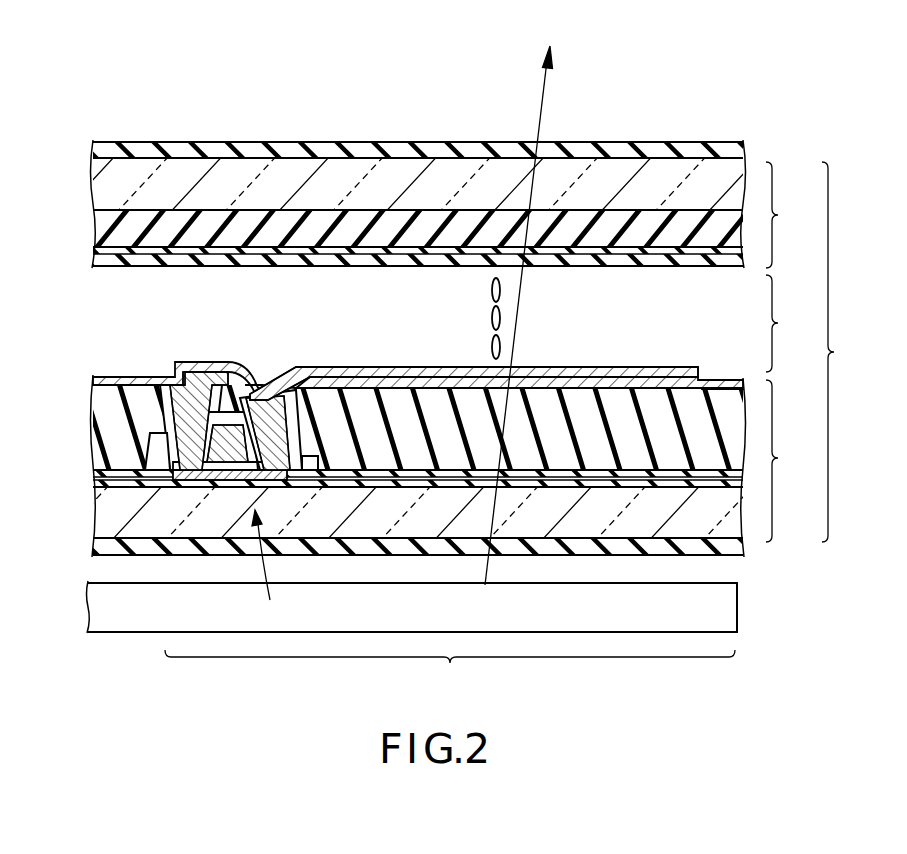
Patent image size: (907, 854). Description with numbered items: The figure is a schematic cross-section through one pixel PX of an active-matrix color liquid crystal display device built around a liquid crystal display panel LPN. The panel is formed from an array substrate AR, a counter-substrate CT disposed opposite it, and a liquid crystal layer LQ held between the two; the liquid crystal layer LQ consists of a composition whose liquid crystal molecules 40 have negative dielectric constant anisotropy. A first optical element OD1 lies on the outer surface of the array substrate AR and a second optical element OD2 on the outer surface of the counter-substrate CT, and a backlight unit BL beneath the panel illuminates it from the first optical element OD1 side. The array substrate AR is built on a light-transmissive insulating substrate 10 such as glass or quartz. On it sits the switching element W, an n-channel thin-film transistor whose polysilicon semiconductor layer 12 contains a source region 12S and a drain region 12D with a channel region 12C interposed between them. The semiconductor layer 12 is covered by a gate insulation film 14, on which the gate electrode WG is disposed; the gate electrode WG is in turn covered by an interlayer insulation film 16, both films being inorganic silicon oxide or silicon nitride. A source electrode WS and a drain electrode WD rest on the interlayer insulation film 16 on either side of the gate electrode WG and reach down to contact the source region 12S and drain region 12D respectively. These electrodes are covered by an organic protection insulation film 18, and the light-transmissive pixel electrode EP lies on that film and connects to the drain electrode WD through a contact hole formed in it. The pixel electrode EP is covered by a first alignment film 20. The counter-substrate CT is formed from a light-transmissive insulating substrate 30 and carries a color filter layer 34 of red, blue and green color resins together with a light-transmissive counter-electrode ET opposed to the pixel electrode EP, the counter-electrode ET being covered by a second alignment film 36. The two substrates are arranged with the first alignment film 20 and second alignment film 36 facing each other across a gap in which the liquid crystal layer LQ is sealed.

The insulating substrate 10 is at (93, 510).
The semiconductor layer 12 is at (246, 482).
The source region 12S is at (185, 482).
The channel region 12C is at (228, 482).
The drain region 12D is at (273, 482).
The gate insulation film 14 is at (93, 485).
The interlayer insulation film 16 is at (93, 472).
The protection insulation film 18 is at (93, 411).
The first alignment film 20 is at (135, 377).
The insulating substrate 30 is at (93, 177).
The color filter layer 34 is at (447, 238).
The second alignment film 36 is at (93, 262).
The liquid crystal molecules 40 is at (492, 320).
The switching element W is at (267, 569).
The source electrode WS is at (190, 400).
The drain electrode WD is at (268, 420).
The gate electrode WG is at (233, 440).
The pixel electrode EP is at (370, 367).
The counter-electrode ET is at (647, 256).
The first optical element OD1 is at (745, 550).
The second optical element OD2 is at (745, 156).
The counter-substrate CT is at (789, 215).
The array substrate AR is at (789, 461).
The liquid crystal layer LQ is at (789, 323).
The liquid crystal display panel LPN is at (853, 352).
The backlight unit BL is at (738, 608).
The pixel PX is at (450, 674).